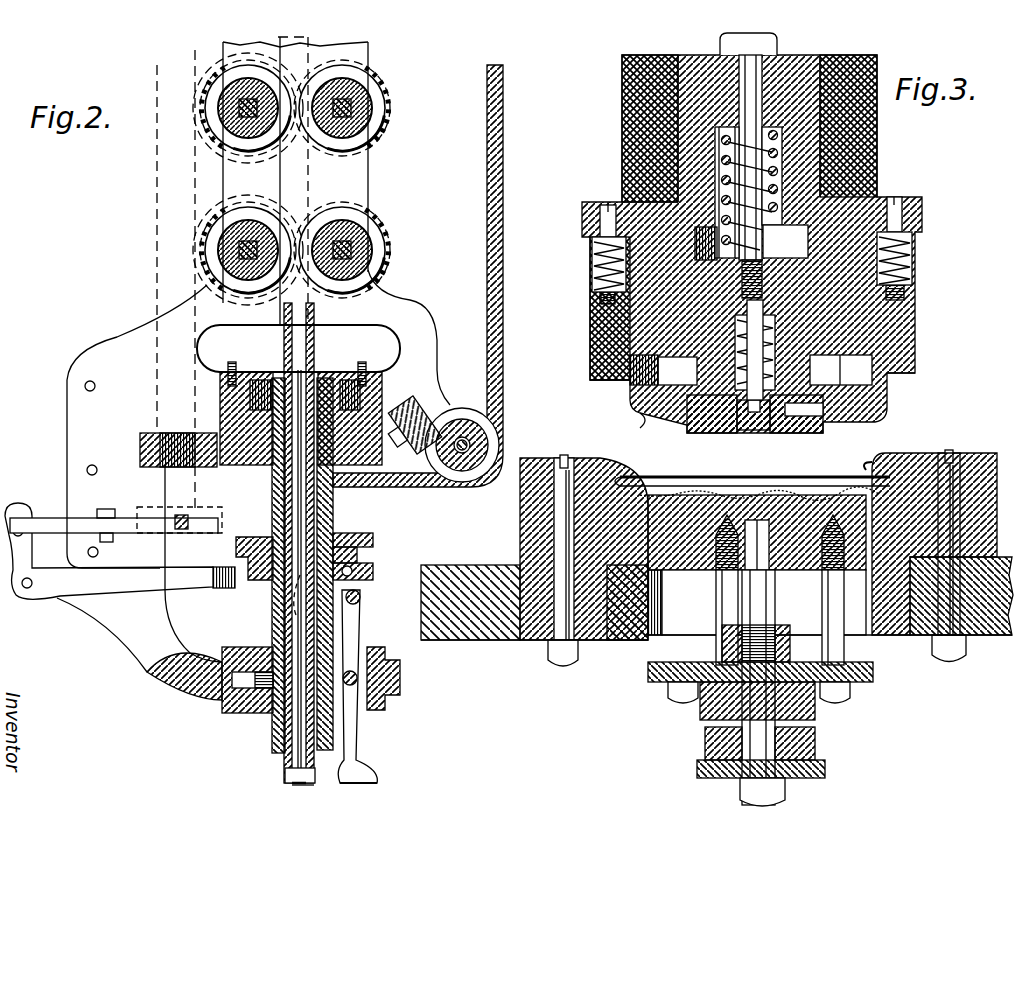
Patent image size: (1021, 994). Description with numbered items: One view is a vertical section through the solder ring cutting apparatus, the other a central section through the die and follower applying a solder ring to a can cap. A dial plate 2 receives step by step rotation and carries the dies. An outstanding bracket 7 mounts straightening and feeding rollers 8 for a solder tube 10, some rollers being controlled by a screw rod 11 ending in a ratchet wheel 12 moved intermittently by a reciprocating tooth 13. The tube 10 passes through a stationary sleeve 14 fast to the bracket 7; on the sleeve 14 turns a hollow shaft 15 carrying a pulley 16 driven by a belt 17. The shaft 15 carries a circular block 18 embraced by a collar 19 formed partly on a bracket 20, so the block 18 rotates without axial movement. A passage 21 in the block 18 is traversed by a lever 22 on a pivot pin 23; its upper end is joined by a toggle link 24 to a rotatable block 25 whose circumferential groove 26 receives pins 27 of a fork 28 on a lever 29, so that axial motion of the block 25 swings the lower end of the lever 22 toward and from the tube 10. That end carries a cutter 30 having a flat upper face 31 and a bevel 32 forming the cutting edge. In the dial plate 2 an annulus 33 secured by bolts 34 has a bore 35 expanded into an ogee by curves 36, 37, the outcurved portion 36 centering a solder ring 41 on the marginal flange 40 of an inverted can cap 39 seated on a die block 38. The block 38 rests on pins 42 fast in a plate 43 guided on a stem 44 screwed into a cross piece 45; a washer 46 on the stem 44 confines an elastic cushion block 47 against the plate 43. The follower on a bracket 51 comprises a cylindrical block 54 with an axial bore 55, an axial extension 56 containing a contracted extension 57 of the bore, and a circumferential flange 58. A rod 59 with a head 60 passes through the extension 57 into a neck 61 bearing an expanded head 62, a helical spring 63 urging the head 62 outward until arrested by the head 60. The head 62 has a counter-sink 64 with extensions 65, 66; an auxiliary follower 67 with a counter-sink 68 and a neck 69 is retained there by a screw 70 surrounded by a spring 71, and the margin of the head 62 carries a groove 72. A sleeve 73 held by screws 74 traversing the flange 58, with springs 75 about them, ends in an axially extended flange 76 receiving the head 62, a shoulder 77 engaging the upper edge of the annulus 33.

In FIG. 3, the dial plate 2 is at (508, 640).
In FIG. 2, the outstanding bracket 7 is at (130, 332).
In FIG. 2, the rollers 8 is at (262, 148).
In FIG. 2, the solder tube 10 is at (310, 345).
In FIG. 2, the screw rod 11 is at (156, 222).
In FIG. 2, the ratchet wheel 12 is at (150, 508).
In FIG. 2, the reciprocating tooth 13 is at (182, 514).
In FIG. 2, the sleeve 14 is at (272, 522).
In FIG. 2, the hollow shaft 15 is at (334, 522).
In FIG. 2, the pulley 16 is at (360, 492).
In FIG. 2, the belt 17 is at (486, 260).
In FIG. 2, the circular block 18 is at (226, 714).
In FIG. 2, the collar 19 is at (401, 675).
In FIG. 2, the bracket 20 is at (158, 680).
In FIG. 2, the passage 21 is at (365, 712).
In FIG. 2, the lever 22 is at (364, 750).
In FIG. 2, the pivot pin 23 is at (360, 648).
In FIG. 2, the toggle link 24 is at (362, 596).
In FIG. 2, the rotatable block 25 is at (374, 538).
In FIG. 2, the circumferential groove 26 is at (358, 556).
In FIG. 2, the pins 27 is at (262, 608).
In FIG. 2, the fork 28 is at (222, 566).
In FIG. 2, the lever 29 is at (105, 598).
In FIG. 2, the cutter 30 is at (372, 786).
In FIG. 2, the upper face 31 is at (284, 772).
In FIG. 2, the bevel 32 is at (316, 786).
In FIG. 3, the annulus 33 is at (524, 526).
In FIG. 3, the bolts 34 is at (562, 665).
In FIG. 3, the central axial bore 35 is at (880, 618).
In FIG. 3, the outcurved portion 36 is at (897, 460).
In FIG. 3, the compound curve portion 37 is at (870, 465).
In FIG. 3, the die block 38 is at (728, 560).
In FIG. 3, the can cap 39 is at (846, 494).
In FIG. 3, the marginal curved flange 40 is at (752, 471).
In FIG. 2, the solder ring 41 is at (290, 786).
In FIG. 3, the solder ring 41 is at (636, 480).
In FIG. 3, the pins 42 is at (822, 578).
In FIG. 3, the plate 43 is at (648, 684).
In FIG. 3, the stem 44 is at (750, 745).
In FIG. 3, the cross piece 45 is at (780, 628).
In FIG. 3, the washer 46 is at (697, 775).
In FIG. 3, the cushion block 47 is at (816, 745).
In FIG. 3, the bracket 51 is at (866, 155).
In FIG. 3, the cylindrical block 54 is at (870, 310).
In FIG. 3, the axial bore 55 is at (751, 242).
In FIG. 3, the axial extension 56 is at (690, 110).
In FIG. 3, the contracted extension of the bore 57 is at (786, 140).
In FIG. 3, the circumferential flange 58 is at (924, 215).
In FIG. 3, the bolt or rod 59 is at (740, 86).
In FIG. 3, the head 60 is at (780, 40).
In FIG. 3, the neck 61 is at (790, 318).
In FIG. 3, the laterally expanded head 62 is at (888, 388).
In FIG. 3, the helical spring 63 is at (715, 160).
In FIG. 3, the counter-sink 64 is at (841, 370).
In FIG. 3, the axial extension 65 is at (663, 370).
In FIG. 3, the further axial extension 66 is at (735, 345).
In FIG. 3, the auxiliary follower 67 is at (810, 418).
In FIG. 3, the axial counter-sink 68 is at (790, 433).
In FIG. 3, the neck 69 is at (726, 433).
In FIG. 3, the screw 70 is at (752, 430).
In FIG. 3, the helical spring 71 is at (827, 370).
In FIG. 3, the groove 72 is at (636, 428).
In FIG. 3, the sleeve 73 is at (600, 315).
In FIG. 3, the screws 74 is at (600, 228).
In FIG. 3, the springs 75 is at (592, 272).
In FIG. 3, the axially extended flange 76 is at (630, 400).
In FIG. 3, the shoulder 77 is at (595, 380).